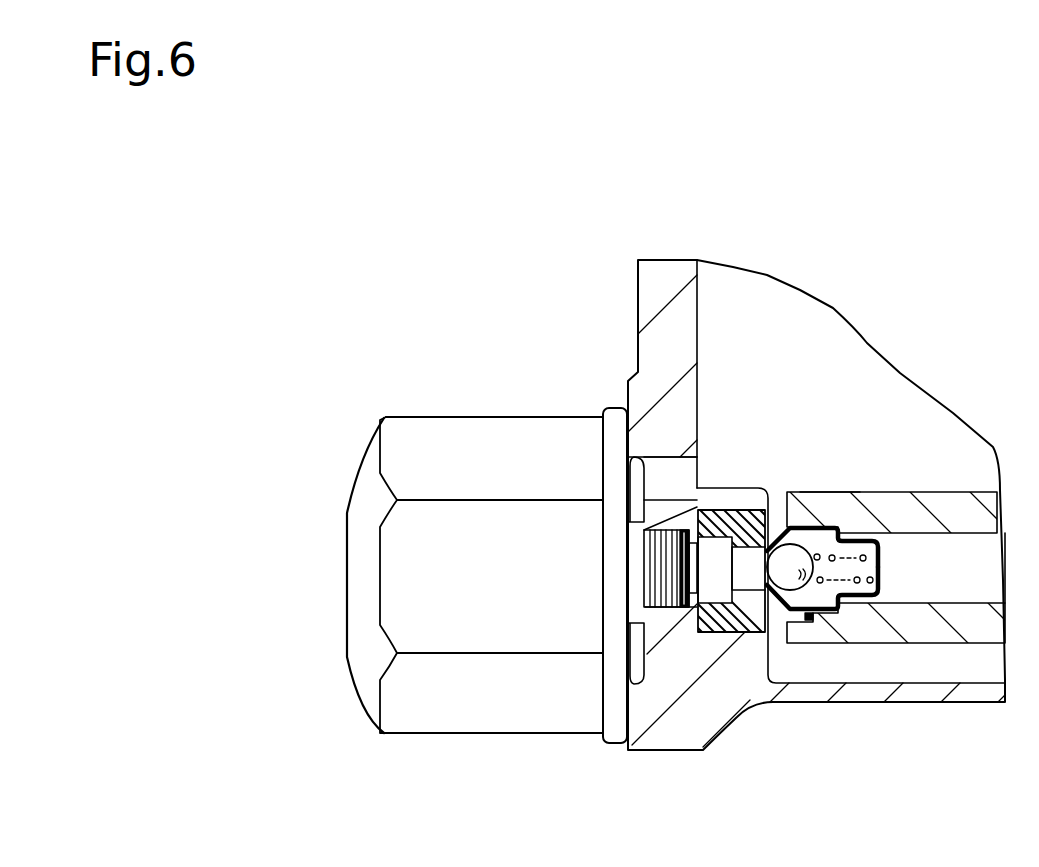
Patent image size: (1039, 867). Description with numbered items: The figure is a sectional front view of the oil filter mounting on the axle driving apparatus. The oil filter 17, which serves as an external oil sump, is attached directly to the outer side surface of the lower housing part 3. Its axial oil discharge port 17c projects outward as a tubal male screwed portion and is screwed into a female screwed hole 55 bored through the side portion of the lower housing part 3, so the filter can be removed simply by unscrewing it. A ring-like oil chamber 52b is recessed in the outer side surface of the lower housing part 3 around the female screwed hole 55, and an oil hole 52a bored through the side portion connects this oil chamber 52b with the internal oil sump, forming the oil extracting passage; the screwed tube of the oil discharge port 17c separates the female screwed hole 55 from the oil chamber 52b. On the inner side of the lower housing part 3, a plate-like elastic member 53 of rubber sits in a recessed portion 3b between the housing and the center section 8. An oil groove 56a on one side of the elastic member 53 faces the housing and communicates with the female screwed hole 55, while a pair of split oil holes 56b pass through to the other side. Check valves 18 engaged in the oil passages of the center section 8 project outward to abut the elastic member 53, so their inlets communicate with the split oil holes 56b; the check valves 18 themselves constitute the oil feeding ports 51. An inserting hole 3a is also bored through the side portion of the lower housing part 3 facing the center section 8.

The lower housing part 3 is at (638, 280).
The inserting hole 3a is at (960, 601).
The recessed portion 3b is at (745, 498).
The center section 8 is at (907, 490).
The oil filter 17 is at (502, 599).
The oil discharge port 17c is at (650, 578).
The check valve 18 is at (795, 522).
The oil feeding port 51 is at (829, 477).
The oil hole 52a is at (683, 477).
The oil chamber 52b is at (638, 472).
The elastic member 53 is at (722, 633).
The female screwed hole 55 is at (665, 607).
The oil groove 56a is at (718, 595).
The split oil hole 56b is at (757, 633).